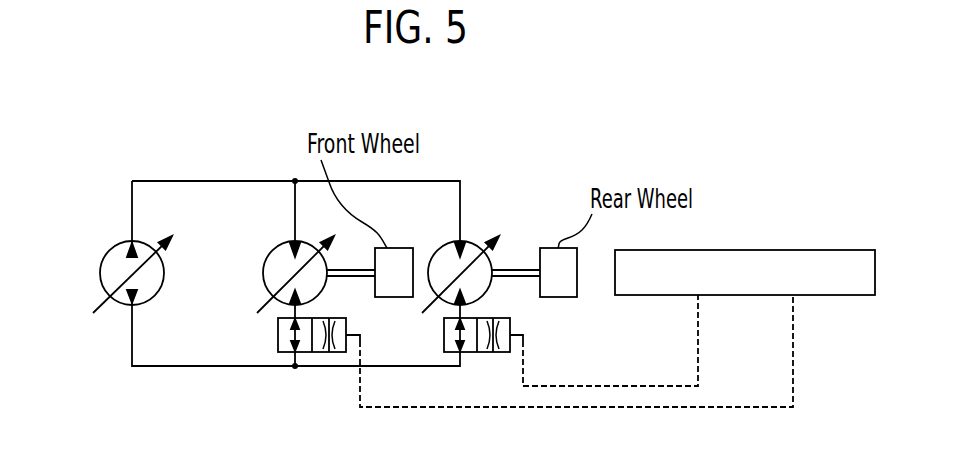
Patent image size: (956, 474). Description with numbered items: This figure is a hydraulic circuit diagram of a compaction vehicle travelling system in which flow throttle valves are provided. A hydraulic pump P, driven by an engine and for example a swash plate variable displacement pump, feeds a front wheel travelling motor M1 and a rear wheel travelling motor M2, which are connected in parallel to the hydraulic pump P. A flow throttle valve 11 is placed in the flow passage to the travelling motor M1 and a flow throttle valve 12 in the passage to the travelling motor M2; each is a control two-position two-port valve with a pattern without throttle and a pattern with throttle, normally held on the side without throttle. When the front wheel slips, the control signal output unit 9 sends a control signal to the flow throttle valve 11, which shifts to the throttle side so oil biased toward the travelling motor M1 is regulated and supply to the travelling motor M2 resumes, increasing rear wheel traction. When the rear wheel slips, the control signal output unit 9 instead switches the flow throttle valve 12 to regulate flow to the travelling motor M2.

The hydraulic pump P is at (111, 250).
The travelling motor M1 is at (271, 250).
The travelling motor M2 is at (445, 251).
The flow throttle valve 11 is at (278, 345).
The flow throttle valve 12 is at (444, 345).
The control signal output unit 9 is at (709, 250).